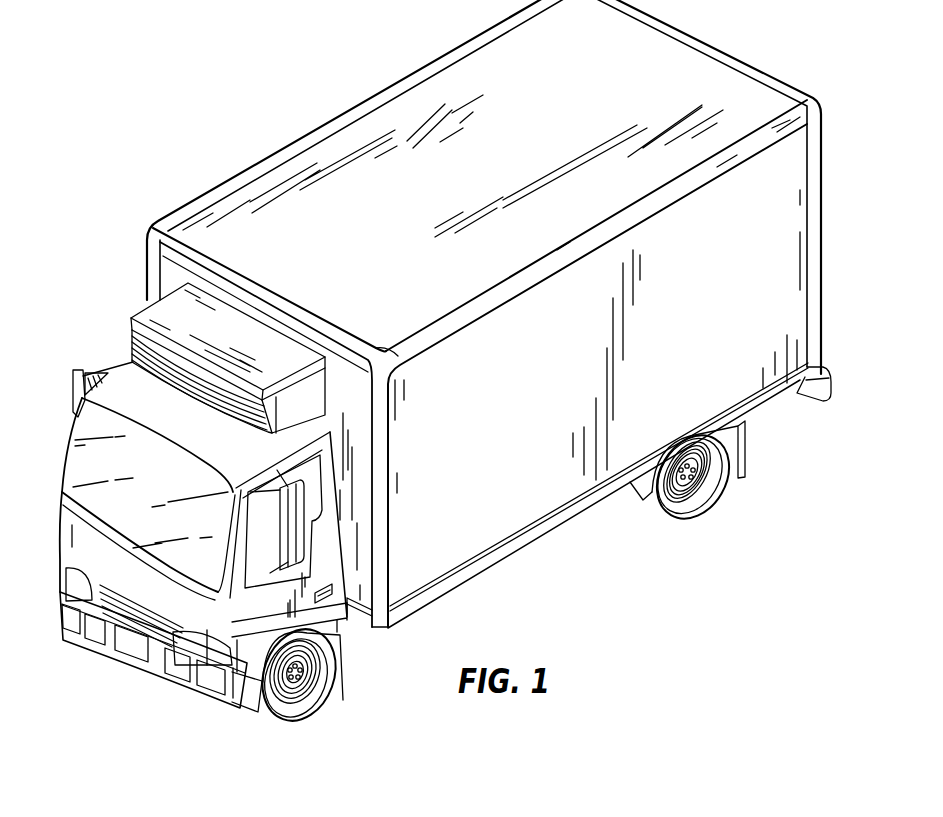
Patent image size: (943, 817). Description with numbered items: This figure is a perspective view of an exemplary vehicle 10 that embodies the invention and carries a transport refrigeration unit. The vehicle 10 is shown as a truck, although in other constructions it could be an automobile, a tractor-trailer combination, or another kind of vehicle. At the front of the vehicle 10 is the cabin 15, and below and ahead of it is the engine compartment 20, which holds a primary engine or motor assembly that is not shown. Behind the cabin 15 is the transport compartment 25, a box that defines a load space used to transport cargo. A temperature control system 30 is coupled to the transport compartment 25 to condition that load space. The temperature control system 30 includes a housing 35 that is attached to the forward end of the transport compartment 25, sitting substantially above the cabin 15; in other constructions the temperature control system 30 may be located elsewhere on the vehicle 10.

The vehicle 10 is at (448, 365).
The cabin 15 is at (187, 535).
The engine compartment 20 is at (136, 618).
The transport compartment 25 is at (773, 255).
The temperature control system 30 is at (178, 347).
The housing 35 is at (147, 317).